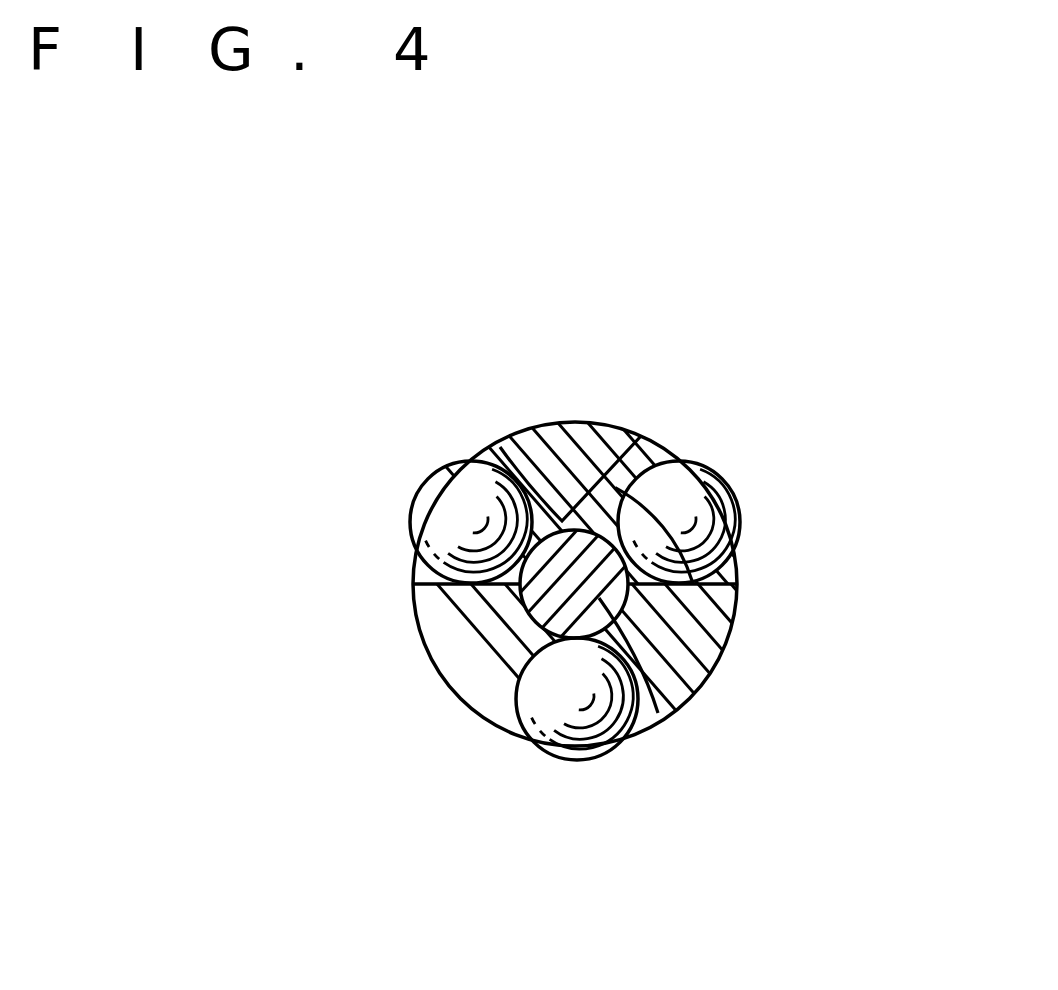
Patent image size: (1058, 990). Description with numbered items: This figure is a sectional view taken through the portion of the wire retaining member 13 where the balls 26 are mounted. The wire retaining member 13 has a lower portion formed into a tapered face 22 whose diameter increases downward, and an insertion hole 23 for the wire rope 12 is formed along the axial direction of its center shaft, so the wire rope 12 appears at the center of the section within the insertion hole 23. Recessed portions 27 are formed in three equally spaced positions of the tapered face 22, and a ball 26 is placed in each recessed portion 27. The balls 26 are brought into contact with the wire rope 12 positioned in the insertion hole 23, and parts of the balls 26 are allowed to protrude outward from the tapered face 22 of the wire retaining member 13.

The wire rope 12 is at (565, 558).
The wire retaining member 13 is at (683, 688).
The tapered face 22 is at (415, 613).
The insertion hole 23 is at (541, 612).
The balls 26 is at (442, 503).
The recessed portions 27 is at (730, 637).